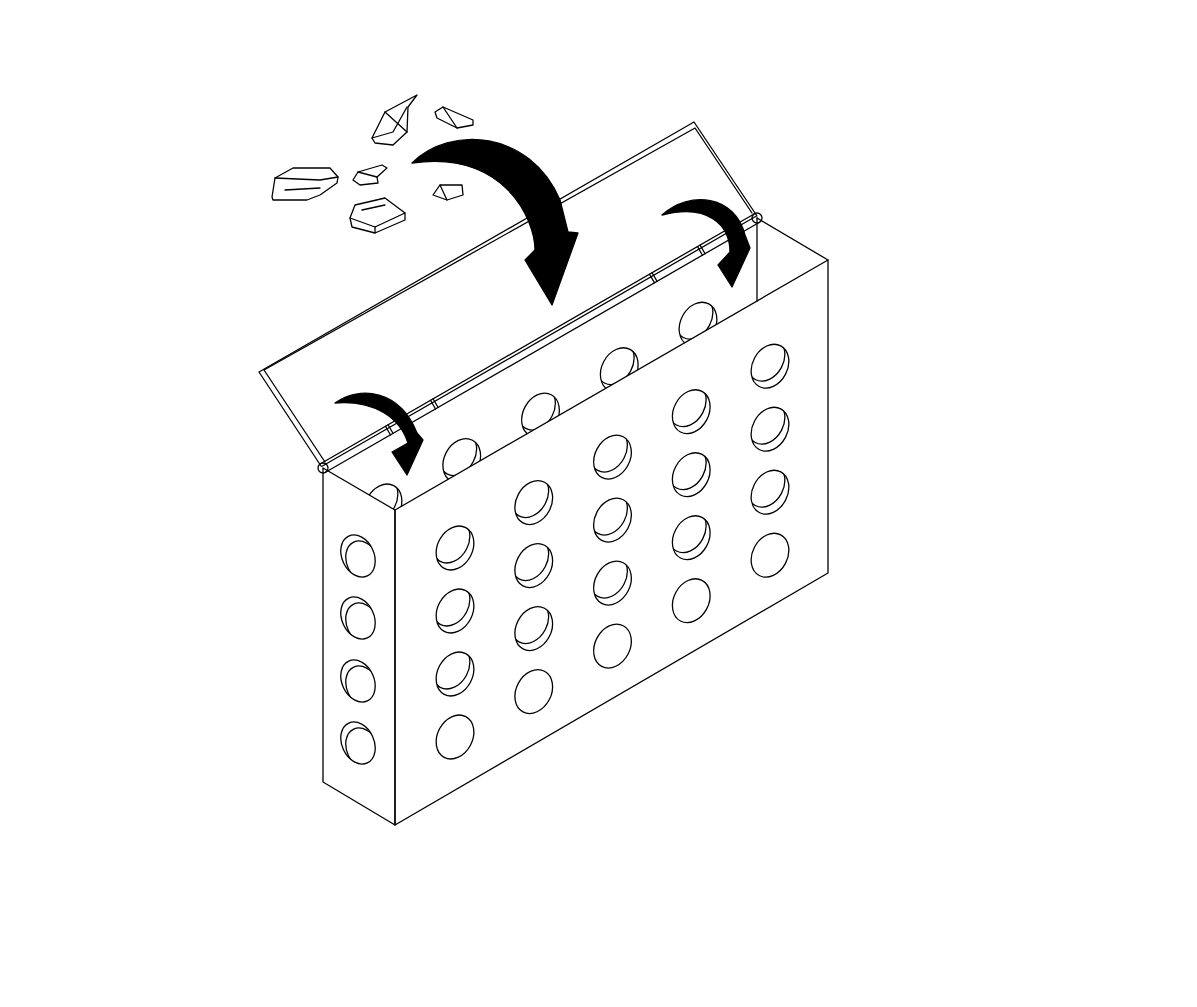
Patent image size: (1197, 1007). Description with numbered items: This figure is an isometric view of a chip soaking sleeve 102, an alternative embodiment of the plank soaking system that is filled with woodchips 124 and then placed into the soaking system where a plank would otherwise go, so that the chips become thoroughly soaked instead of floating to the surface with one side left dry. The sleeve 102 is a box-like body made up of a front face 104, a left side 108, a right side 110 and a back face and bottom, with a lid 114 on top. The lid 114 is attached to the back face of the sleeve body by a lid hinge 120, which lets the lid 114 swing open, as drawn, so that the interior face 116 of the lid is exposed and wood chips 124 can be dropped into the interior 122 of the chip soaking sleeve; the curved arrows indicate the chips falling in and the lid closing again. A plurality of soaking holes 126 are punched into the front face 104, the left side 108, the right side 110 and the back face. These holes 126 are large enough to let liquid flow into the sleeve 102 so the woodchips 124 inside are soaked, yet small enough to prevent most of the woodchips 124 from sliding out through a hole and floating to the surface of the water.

The chip soaking sleeve 102 is at (1096, 116).
The front face 104 is at (743, 583).
The left side 108 is at (327, 637).
The right side 110 is at (793, 238).
The lid 114 is at (255, 376).
The interior face 116 is at (462, 350).
The lid hinge 120 is at (319, 478).
The interior 122 is at (590, 376).
The woodchips 124 is at (366, 211).
The soaking holes 126 is at (760, 415).